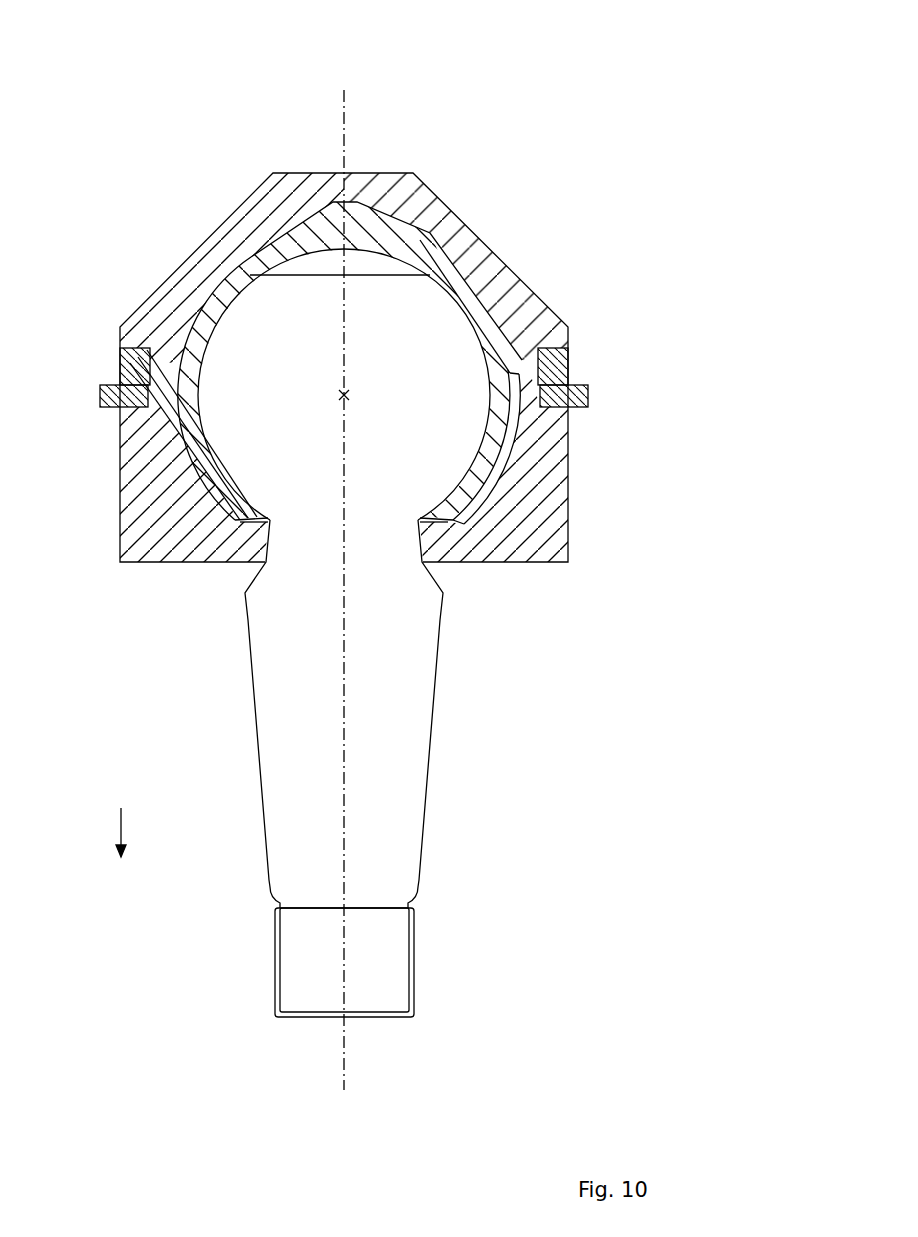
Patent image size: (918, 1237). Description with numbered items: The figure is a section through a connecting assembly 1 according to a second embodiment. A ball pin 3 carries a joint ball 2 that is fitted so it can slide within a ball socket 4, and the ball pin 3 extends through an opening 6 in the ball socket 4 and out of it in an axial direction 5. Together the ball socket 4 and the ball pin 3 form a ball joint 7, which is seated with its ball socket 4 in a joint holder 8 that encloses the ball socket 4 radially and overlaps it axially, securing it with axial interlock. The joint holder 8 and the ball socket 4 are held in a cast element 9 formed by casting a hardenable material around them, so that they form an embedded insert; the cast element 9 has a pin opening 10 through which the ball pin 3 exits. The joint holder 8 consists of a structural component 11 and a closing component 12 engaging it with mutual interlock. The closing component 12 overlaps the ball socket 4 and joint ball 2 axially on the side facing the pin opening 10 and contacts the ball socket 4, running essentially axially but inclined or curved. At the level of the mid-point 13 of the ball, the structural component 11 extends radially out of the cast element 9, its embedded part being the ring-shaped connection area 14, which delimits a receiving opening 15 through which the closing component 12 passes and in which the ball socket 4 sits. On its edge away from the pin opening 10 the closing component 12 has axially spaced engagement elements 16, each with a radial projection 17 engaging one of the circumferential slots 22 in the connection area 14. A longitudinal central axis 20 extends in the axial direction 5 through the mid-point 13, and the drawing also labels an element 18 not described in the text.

The connecting assembly 1 is at (578, 79).
The joint ball 2 is at (257, 305).
The ball pin 3 is at (432, 736).
The ball socket 4 is at (480, 233).
The axial direction 5 is at (111, 832).
The opening 6 is at (245, 540).
The ball joint 7 is at (483, 626).
The joint holder 8 is at (506, 489).
The cast element 9 is at (258, 196).
The pin opening 10 is at (243, 548).
The structural component 11 is at (100, 396).
The closing component 12 is at (160, 468).
The mid-point 13 is at (341, 395).
The connection area 14 is at (117, 428).
The receiving opening 15 is at (540, 422).
The engagement elements 16 is at (185, 368).
The radial projection 17 is at (118, 365).
The shell inner surface 18 is at (180, 402).
The longitudinal central axis 20 is at (350, 115).
The slots 22 is at (568, 362).